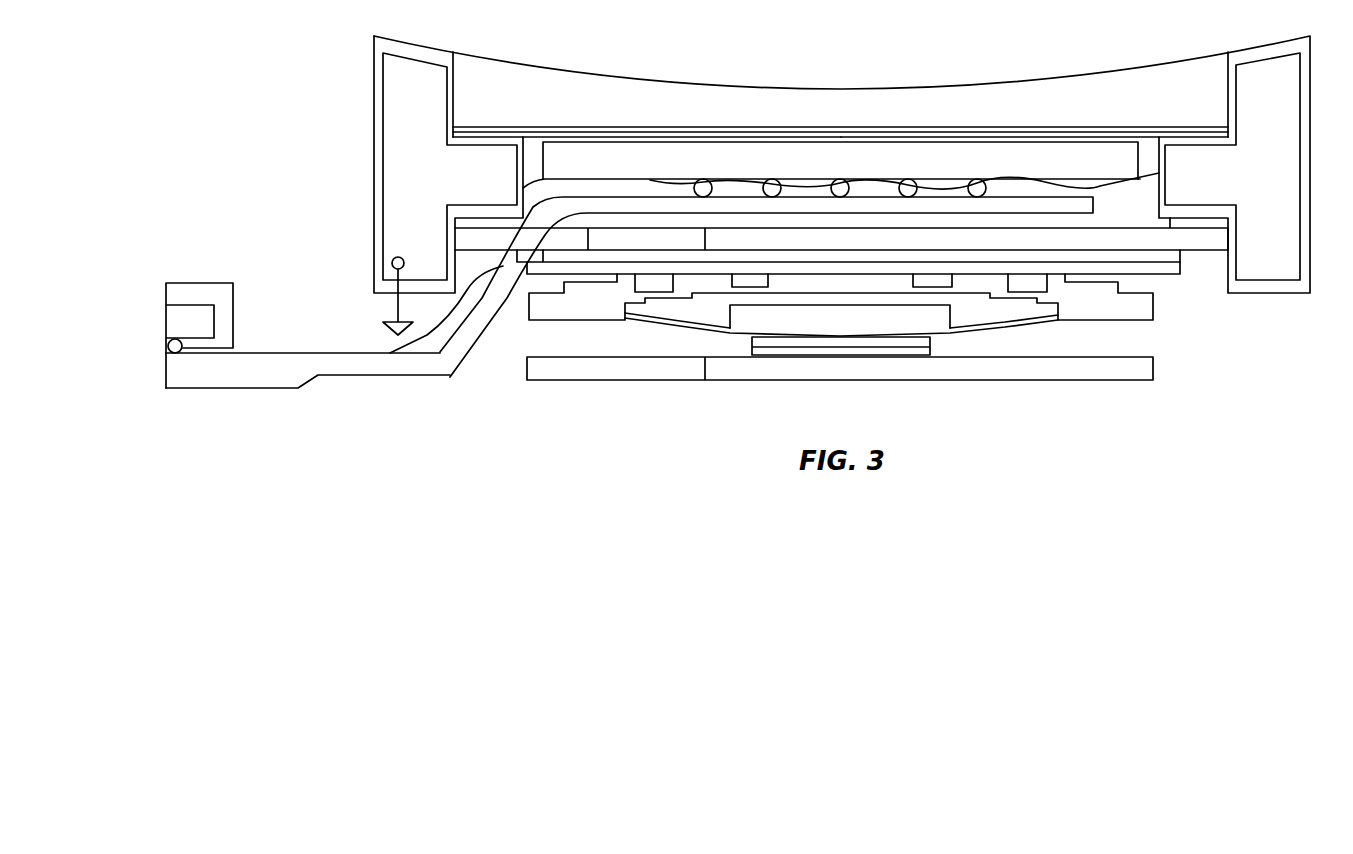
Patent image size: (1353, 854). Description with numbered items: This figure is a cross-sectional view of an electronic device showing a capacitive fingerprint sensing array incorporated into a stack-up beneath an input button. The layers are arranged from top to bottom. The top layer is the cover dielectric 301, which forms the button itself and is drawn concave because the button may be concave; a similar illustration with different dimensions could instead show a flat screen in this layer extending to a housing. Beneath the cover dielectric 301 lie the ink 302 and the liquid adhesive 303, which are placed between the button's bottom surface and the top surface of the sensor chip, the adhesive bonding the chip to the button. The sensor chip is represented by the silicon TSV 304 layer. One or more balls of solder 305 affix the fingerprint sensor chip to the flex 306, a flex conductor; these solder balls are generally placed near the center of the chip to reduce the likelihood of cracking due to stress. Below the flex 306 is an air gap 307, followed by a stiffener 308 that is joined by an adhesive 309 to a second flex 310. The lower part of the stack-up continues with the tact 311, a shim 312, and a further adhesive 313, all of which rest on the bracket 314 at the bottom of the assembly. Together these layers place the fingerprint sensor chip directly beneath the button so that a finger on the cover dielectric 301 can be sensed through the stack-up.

The cover dielectric 301 is at (842, 94).
The ink 302 is at (976, 129).
The liquid adhesive 303 is at (1149, 136).
The silicon TSV 304 is at (705, 141).
The solder 305 is at (1110, 185).
The flex 306 is at (765, 247).
The air gap 307 is at (1088, 221).
The stiffener 308 is at (1220, 234).
The adhesive 309 is at (1172, 259).
The flex 310 is at (1174, 268).
The tact 311 is at (1138, 313).
The shim 312 is at (754, 341).
The adhesive 313 is at (921, 356).
The bracket 314 is at (1148, 371).